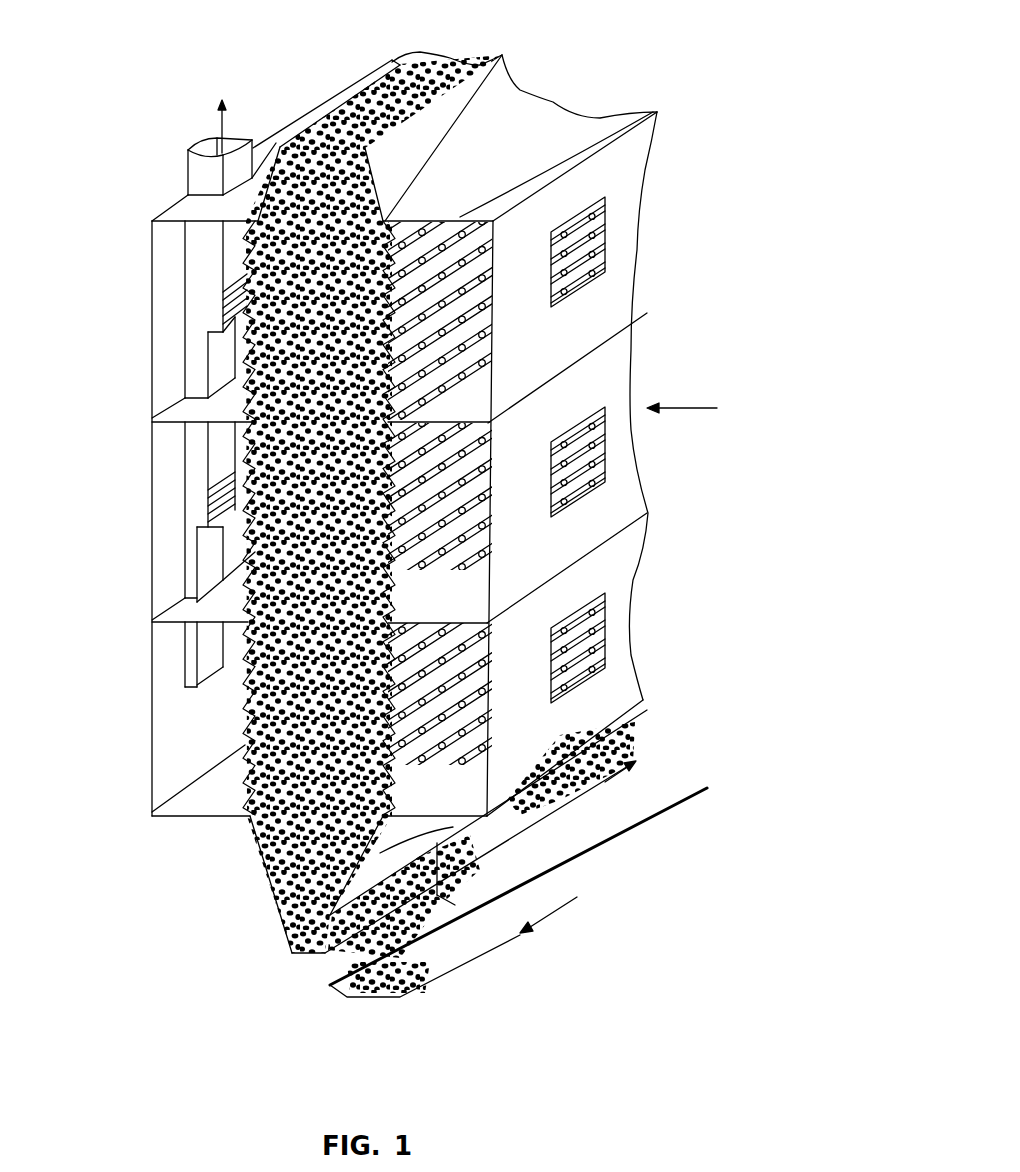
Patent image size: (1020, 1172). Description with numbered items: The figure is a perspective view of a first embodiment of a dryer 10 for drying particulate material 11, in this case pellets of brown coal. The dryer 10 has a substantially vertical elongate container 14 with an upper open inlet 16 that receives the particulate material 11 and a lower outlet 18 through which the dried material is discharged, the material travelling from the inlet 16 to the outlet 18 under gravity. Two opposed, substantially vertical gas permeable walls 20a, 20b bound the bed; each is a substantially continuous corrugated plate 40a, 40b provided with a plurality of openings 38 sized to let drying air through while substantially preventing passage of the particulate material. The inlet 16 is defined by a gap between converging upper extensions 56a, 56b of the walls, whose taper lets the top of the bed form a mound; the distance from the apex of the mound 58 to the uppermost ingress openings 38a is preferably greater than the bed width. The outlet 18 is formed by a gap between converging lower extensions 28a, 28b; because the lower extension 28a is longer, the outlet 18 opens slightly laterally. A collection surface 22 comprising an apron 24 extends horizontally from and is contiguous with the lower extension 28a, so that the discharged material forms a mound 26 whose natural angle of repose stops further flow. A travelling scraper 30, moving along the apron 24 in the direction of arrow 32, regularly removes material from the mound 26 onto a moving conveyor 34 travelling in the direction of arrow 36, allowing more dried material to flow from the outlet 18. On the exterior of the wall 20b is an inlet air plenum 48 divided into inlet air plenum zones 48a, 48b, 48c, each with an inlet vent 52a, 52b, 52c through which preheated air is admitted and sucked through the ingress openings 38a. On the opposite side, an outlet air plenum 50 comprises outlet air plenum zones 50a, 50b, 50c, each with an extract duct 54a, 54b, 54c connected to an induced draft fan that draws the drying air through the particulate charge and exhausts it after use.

The dryer 10 is at (615, 170).
The particulate material 11 is at (228, 820).
The container 14 is at (250, 496).
The inlet 16 is at (330, 113).
The outlet 18 is at (280, 920).
The gas permeable wall 20a is at (255, 633).
The gas permeable wall 20b is at (487, 505).
The collection surface 22 is at (380, 935).
The apron 24 is at (392, 930).
The mound 26 is at (287, 943).
The lower extension 28a is at (265, 883).
The lower extension 28b is at (507, 827).
The travelling scraper 30 is at (453, 873).
The arrow 32 is at (653, 763).
The conveyor 34 is at (640, 807).
The arrow 36 is at (550, 913).
The openings 38 is at (487, 547).
The ingress openings 38a is at (652, 118).
The corrugated plate 40a is at (255, 355).
The corrugated plate 40b is at (630, 350).
The air plenum 48 is at (390, 415).
The inlet air plenum zone 48a is at (623, 272).
The inlet air plenum zone 48b is at (612, 460).
The inlet air plenum zone 48c is at (608, 687).
The air plenum 50 is at (152, 318).
The outlet air plenum zone 50a is at (152, 286).
The outlet air plenum zone 50b is at (152, 477).
The outlet air plenum zone 50c is at (152, 702).
The inlet vent 52a is at (590, 237).
The inlet vent 52b is at (560, 405).
The inlet vent 52c is at (612, 630).
The extract duct 54a is at (205, 247).
The extract duct 54b is at (190, 439).
The extract duct 54c is at (190, 659).
The upper extension 56a is at (347, 103).
The upper extension 56b is at (470, 115).
The apex of the mound 58 is at (314, 112).